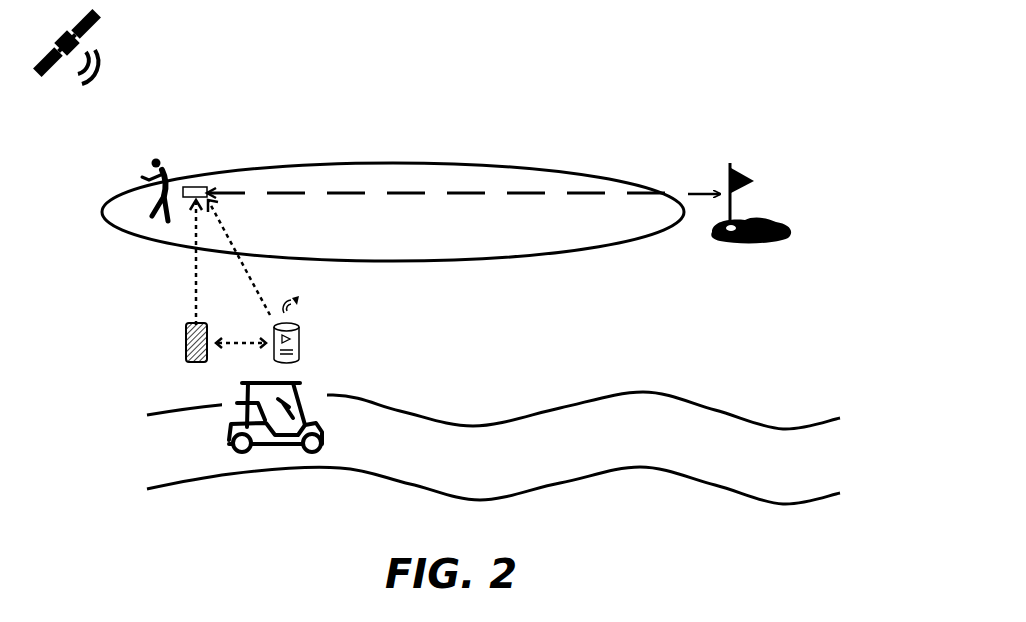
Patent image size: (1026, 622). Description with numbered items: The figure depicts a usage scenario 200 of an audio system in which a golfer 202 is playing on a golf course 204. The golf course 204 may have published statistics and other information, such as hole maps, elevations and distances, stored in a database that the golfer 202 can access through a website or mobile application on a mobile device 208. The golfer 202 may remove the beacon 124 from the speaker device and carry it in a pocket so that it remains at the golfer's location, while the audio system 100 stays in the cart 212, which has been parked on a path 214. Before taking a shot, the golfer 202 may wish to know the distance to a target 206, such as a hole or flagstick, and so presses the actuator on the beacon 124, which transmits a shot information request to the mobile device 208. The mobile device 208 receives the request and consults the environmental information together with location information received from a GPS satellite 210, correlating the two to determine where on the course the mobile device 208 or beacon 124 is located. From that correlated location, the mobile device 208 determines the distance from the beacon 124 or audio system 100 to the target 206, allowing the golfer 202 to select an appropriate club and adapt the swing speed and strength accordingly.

The usage scenario 200 is at (838, 98).
The golfer 202 is at (157, 160).
The golf course 204 is at (343, 163).
The target 206 is at (732, 163).
The mobile device 208 is at (186, 331).
The audio system 100 is at (300, 338).
The beacon 124 is at (205, 187).
The GPS satellite 210 is at (100, 60).
The cart 212 is at (272, 453).
The path 214 is at (722, 412).